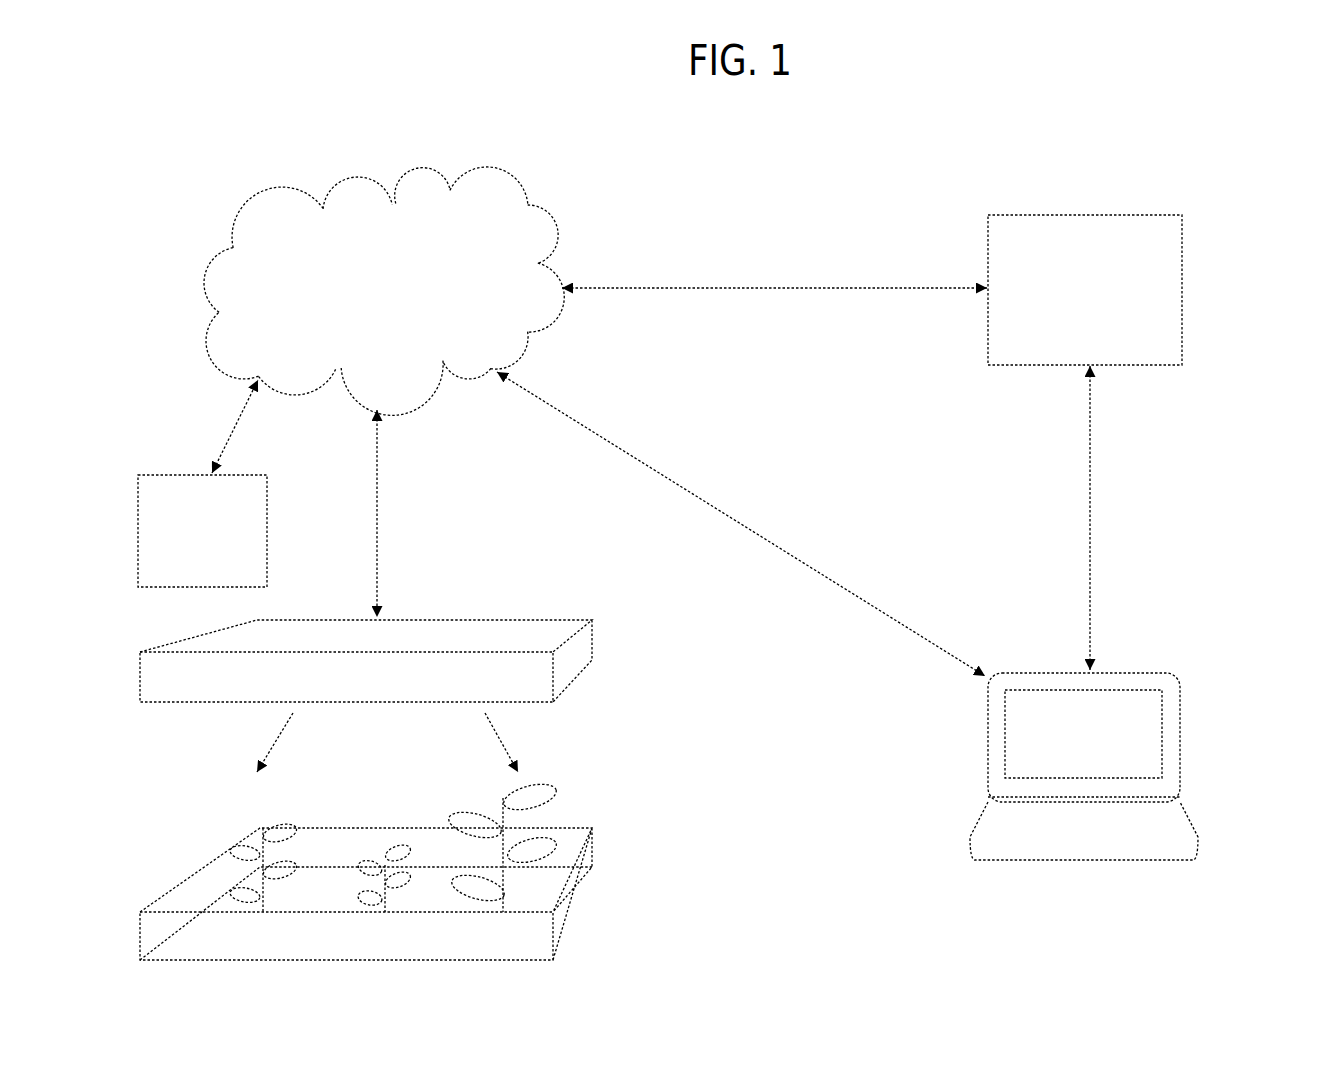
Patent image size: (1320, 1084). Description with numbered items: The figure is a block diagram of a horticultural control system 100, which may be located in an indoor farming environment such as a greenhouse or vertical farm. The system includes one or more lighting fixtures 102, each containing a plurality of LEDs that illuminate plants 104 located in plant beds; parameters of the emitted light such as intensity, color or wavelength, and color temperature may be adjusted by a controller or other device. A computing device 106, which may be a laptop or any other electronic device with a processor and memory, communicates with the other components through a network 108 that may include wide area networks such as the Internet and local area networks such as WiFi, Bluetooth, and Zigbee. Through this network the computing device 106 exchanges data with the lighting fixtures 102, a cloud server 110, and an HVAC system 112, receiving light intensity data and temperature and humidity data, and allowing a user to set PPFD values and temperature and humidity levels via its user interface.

The horticultural control system 100 is at (1218, 166).
The lighting fixture 102 is at (562, 721).
The plants 104 is at (191, 857).
The computing device 106 is at (1196, 666).
The network 108 is at (384, 291).
The cloud server 110 is at (1085, 290).
The HVAC system 112 is at (202, 531).